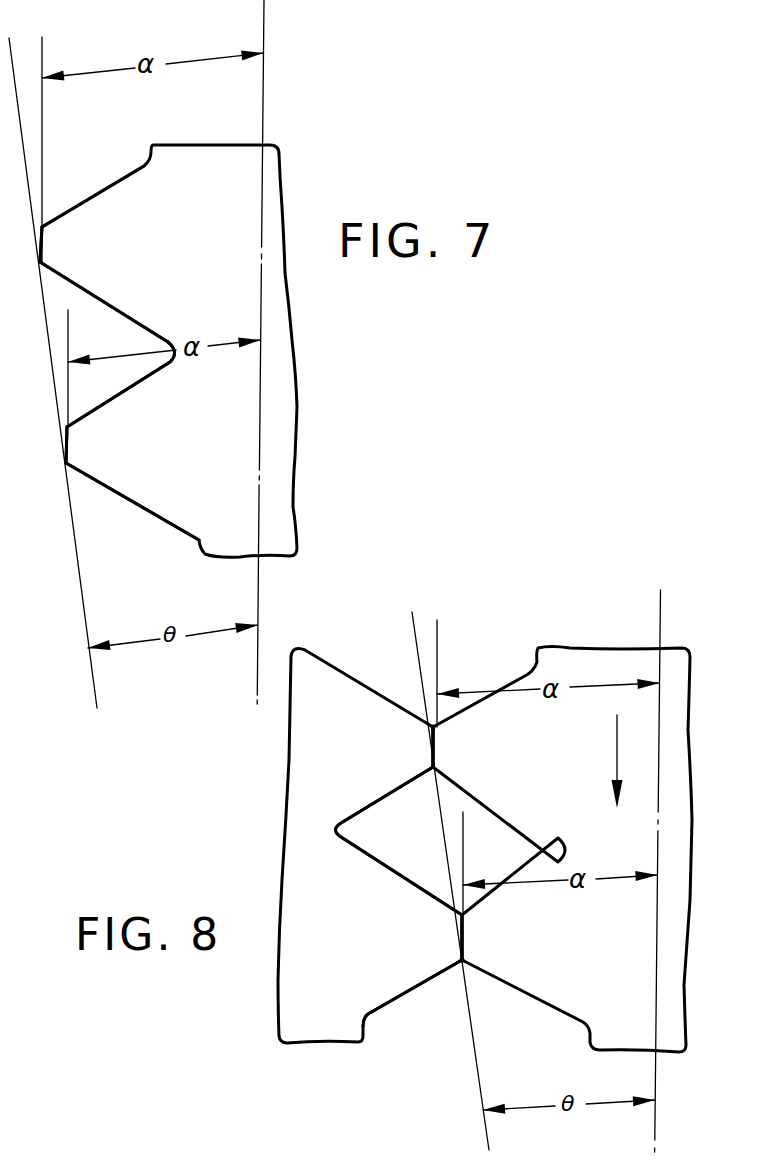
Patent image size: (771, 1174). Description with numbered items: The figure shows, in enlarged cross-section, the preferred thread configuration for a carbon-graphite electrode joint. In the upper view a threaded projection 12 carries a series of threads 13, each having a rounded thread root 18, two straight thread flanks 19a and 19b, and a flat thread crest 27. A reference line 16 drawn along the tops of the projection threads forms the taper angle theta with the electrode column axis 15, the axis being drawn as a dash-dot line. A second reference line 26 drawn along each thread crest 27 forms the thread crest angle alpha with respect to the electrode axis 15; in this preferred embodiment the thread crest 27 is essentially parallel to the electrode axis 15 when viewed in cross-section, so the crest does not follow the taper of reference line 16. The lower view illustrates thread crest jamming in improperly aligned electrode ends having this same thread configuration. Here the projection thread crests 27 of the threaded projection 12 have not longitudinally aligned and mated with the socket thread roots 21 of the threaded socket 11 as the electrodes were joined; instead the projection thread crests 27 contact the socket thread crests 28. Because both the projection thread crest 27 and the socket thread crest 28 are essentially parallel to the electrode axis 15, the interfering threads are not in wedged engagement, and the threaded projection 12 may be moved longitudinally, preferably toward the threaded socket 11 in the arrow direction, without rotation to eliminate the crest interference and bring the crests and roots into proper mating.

In FIG. 8, the threaded socket 11 is at (285, 874).
In FIG. 7, the threaded projection 12 is at (193, 147).
In FIG. 8, the threaded projection 12 is at (610, 658).
In FIG. 7, the thread 13 is at (85, 258).
In FIG. 7, the electrode column axis 15 is at (263, 93).
In FIG. 8, the electrode column axis 15 is at (660, 624).
In FIG. 7, the reference line 16 is at (75, 568).
In FIG. 8, the reference line 16 is at (416, 645).
In FIG. 7, the thread root 18 is at (178, 356).
In FIG. 7, the thread flank 19a is at (102, 192).
In FIG. 7, the thread flank 19b is at (147, 507).
In FIG. 8, the socket thread root 21 is at (336, 828).
In FIG. 7, the reference line 26 is at (42, 121).
In FIG. 8, the reference line 26 is at (437, 643).
In FIG. 7, the projection thread crest 27 is at (42, 243).
In FIG. 8, the projection thread crest 27 is at (437, 745).
In FIG. 8, the socket thread crest 28 is at (433, 742).